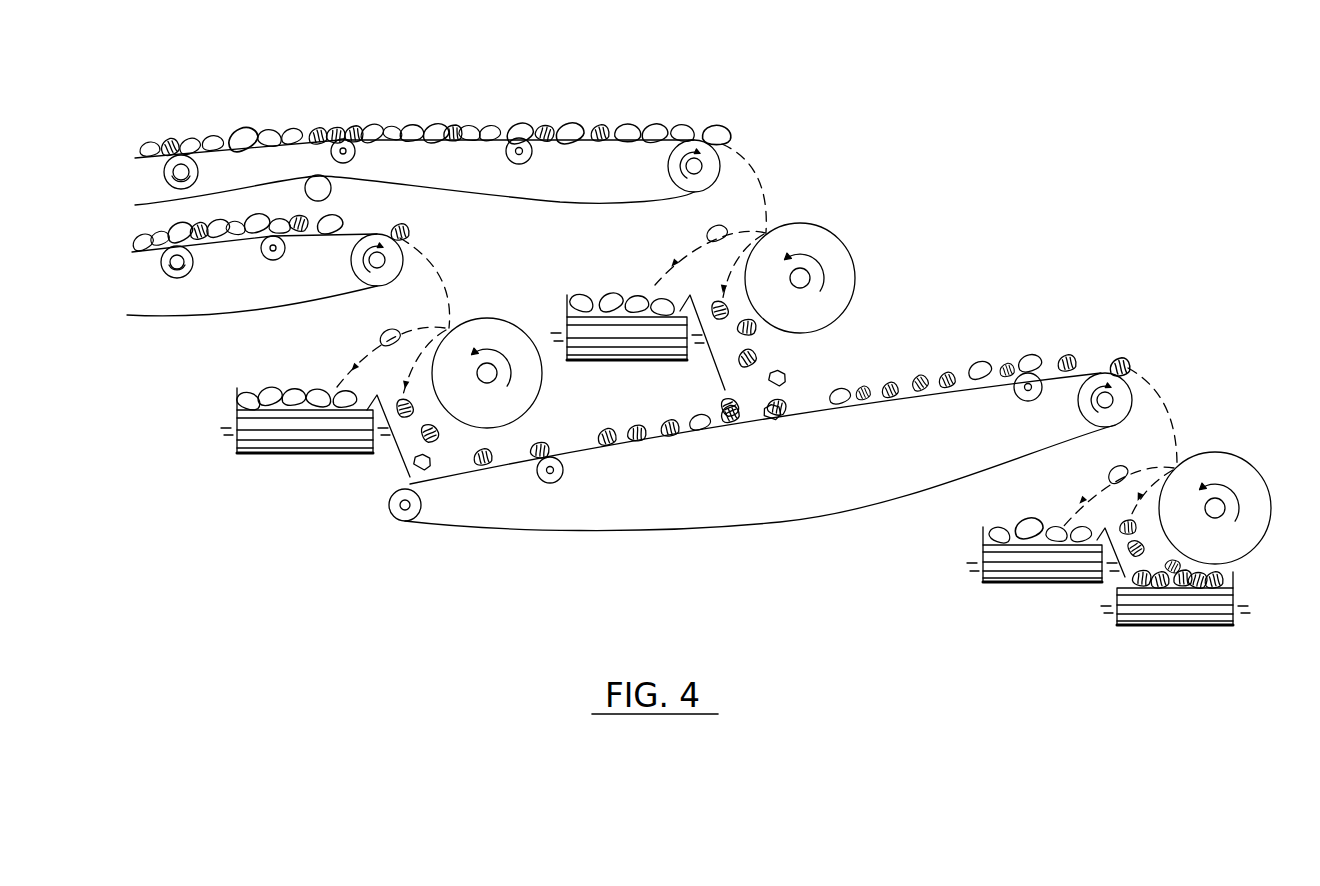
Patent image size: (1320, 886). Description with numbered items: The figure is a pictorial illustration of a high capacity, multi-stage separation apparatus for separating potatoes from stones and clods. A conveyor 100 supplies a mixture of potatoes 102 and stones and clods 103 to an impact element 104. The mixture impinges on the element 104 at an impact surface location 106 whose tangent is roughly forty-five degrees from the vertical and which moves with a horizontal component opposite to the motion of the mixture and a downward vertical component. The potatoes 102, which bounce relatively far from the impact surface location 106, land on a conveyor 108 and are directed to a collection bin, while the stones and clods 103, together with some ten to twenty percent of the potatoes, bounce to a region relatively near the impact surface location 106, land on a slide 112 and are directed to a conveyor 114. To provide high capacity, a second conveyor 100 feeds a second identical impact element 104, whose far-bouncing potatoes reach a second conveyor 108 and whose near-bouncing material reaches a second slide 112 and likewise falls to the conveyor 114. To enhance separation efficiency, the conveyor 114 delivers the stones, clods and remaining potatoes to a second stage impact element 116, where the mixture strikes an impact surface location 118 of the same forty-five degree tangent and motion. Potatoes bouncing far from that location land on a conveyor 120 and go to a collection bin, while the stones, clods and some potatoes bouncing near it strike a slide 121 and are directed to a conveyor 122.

The conveyor 100 is at (502, 133).
The potatoes 102 is at (440, 120).
The stones and clods 103 is at (353, 140).
The impact element 104 is at (828, 223).
The impact surface location 106 is at (765, 232).
The conveyor 108 is at (253, 447).
The slide 112 is at (393, 448).
The conveyor 114 is at (815, 407).
The second stage impact element 116 is at (1253, 477).
The impact surface location 118 is at (1177, 468).
The conveyor 120 is at (983, 545).
The slide 121 is at (1117, 577).
The conveyor 122 is at (1233, 582).